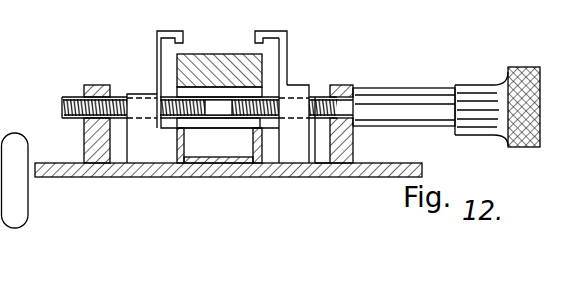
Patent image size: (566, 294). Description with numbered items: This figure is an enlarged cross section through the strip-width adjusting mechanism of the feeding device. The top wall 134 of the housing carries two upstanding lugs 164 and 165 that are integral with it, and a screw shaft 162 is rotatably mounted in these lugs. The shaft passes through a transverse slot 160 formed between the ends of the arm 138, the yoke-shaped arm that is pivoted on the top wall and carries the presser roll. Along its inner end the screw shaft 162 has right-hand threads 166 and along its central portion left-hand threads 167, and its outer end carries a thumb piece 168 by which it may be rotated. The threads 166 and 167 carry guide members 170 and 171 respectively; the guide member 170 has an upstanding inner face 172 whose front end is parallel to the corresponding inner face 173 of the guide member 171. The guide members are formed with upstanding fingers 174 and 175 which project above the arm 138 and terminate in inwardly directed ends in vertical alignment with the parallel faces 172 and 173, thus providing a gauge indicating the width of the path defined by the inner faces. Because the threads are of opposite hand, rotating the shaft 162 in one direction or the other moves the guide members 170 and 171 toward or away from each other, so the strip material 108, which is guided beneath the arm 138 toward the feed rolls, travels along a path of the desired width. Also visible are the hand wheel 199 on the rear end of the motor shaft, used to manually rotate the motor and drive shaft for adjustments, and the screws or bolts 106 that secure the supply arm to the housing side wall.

The screws or bolts 106 is at (35, 11).
The hand wheel 199 is at (13, 148).
The top wall of the housing 134 is at (423, 171).
The upstanding lug 164 is at (83, 152).
The right-hand threads 166 is at (115, 97).
The guide member 170 is at (140, 152).
The upstanding finger 174 is at (157, 44).
The upstanding finger 175 is at (287, 40).
The guide member 171 is at (281, 142).
The arm 138 is at (198, 66).
The transverse slot 160 is at (263, 92).
The inner face 172 is at (176, 165).
The strip material 108 is at (206, 162).
The inner face 173 is at (256, 143).
The left-hand threads 167 is at (320, 100).
The upstanding lug 165 is at (354, 142).
The screw shaft 162 is at (407, 103).
The thumb piece 168 is at (510, 68).